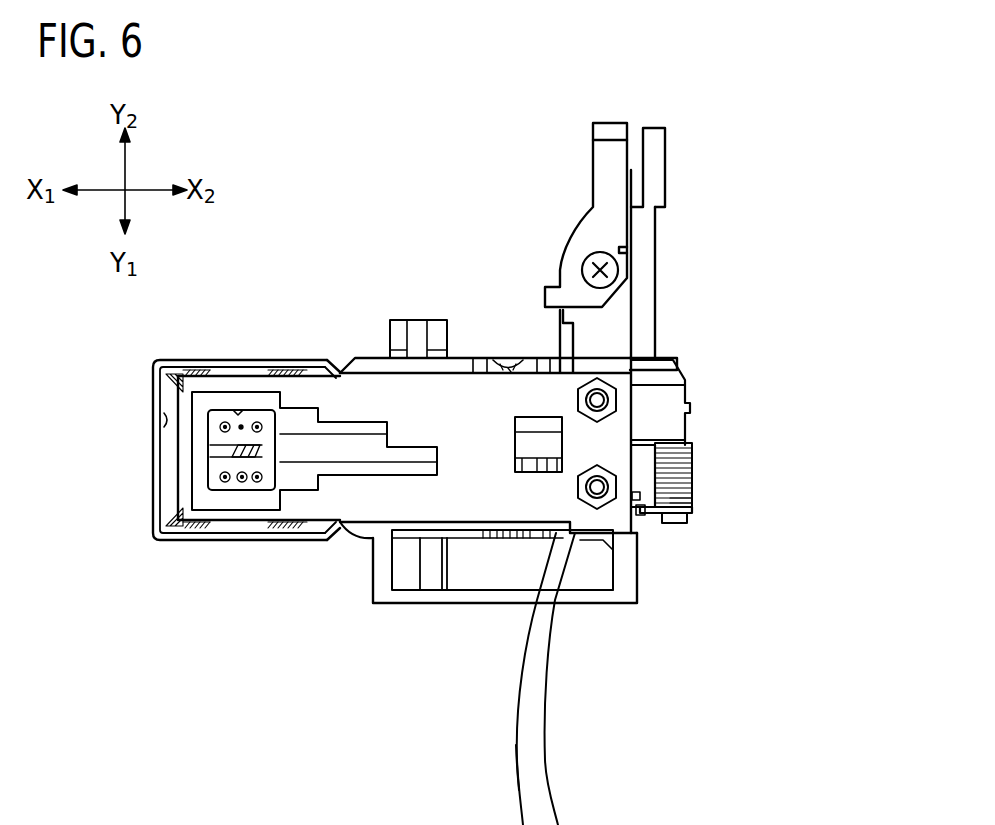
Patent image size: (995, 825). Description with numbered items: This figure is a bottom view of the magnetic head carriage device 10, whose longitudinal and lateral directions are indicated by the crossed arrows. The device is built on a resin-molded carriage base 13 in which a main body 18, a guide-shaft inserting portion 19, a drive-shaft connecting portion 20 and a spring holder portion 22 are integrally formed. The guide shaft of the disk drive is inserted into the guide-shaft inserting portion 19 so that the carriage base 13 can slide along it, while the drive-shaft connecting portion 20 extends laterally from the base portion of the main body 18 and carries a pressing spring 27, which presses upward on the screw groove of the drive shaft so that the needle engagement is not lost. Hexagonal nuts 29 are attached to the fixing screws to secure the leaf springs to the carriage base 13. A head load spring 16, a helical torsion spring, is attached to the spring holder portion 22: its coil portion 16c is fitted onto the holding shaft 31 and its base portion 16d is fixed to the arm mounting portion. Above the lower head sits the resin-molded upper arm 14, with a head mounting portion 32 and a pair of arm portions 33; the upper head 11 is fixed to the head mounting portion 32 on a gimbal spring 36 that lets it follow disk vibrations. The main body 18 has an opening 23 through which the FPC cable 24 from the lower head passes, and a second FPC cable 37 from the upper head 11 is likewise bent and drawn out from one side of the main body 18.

The magnetic head carriage device 10 is at (262, 118).
The upper head 11 is at (227, 452).
The carriage base 13 is at (364, 503).
The upper arm 14 is at (172, 540).
The head load spring 16 is at (700, 463).
The coil portion 16c is at (693, 498).
The base portion 16d is at (640, 520).
The main body 18 is at (410, 400).
The guide-shaft inserting portion 19 is at (478, 593).
The drive-shaft connecting portion 20 is at (594, 132).
The spring holder portion 22 is at (701, 440).
The opening 23 is at (243, 408).
The FPC cable 24 is at (300, 455).
The pressing spring 27 is at (605, 152).
The hexagonal nuts 29 is at (592, 388).
The holding shaft 31 is at (682, 523).
The head mounting portion 32 is at (165, 362).
The arm portions 33 is at (420, 328).
The gimbal spring 36 is at (168, 425).
The FPC cable 37 is at (513, 772).